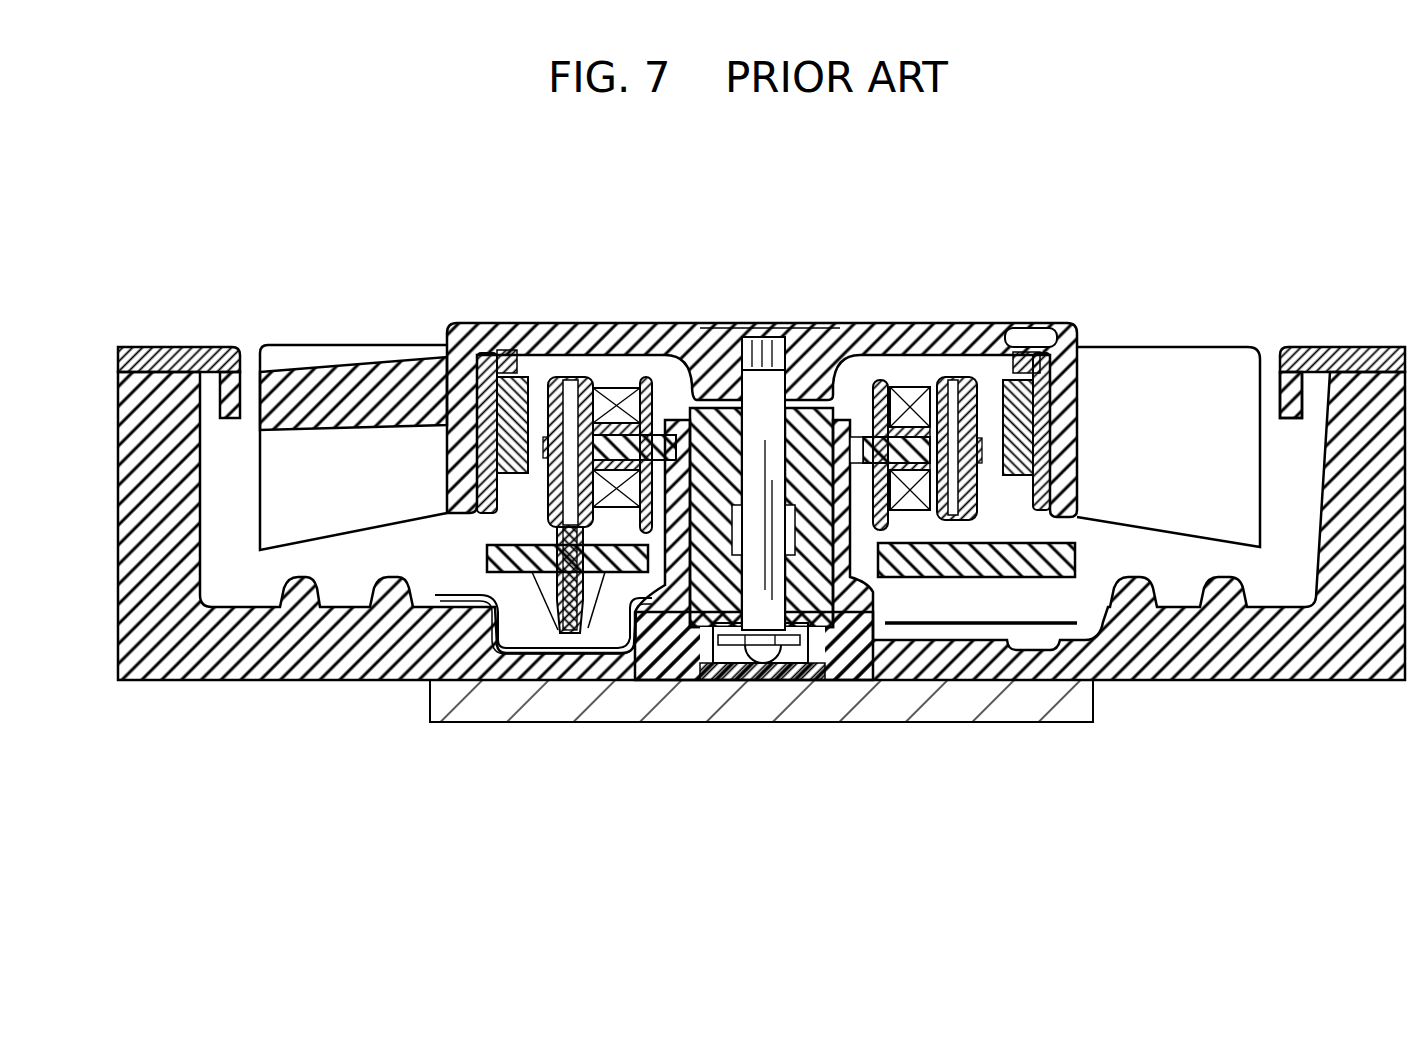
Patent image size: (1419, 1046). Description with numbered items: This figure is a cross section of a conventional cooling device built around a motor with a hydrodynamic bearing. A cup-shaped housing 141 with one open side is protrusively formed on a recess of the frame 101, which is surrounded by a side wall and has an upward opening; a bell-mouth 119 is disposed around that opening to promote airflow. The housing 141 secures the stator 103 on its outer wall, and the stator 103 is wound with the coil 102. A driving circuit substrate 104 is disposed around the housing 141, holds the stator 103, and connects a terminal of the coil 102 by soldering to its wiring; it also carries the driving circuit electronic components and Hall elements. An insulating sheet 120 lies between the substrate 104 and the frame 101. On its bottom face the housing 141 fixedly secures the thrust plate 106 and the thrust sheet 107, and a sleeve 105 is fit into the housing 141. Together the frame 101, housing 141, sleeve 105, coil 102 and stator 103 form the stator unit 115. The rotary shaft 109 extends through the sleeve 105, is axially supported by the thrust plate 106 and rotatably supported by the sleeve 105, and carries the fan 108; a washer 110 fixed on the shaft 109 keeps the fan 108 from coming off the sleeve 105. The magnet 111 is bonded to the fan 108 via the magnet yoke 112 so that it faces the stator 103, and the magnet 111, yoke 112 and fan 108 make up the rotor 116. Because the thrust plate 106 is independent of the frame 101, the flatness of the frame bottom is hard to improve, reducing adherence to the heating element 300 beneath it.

The frame 101 is at (218, 666).
The coil 102 is at (912, 395).
The stator 103 is at (633, 500).
The driving circuit substrate 104 is at (500, 557).
The sleeve 105 is at (815, 590).
The thrust plate 106 is at (786, 668).
The thrust sheet 107 is at (822, 640).
The fan 108 is at (362, 373).
The rotary shaft 109 is at (755, 668).
The washer 110 is at (720, 647).
The magnet 111 is at (1053, 357).
The magnet yoke 112 is at (482, 375).
The stator unit 115 is at (498, 680).
The rotor 116 is at (683, 323).
The bell-mouth 119 is at (1345, 347).
The insulating sheet 120 is at (1013, 640).
The housing 141 is at (852, 410).
The heating element 300 is at (1097, 720).